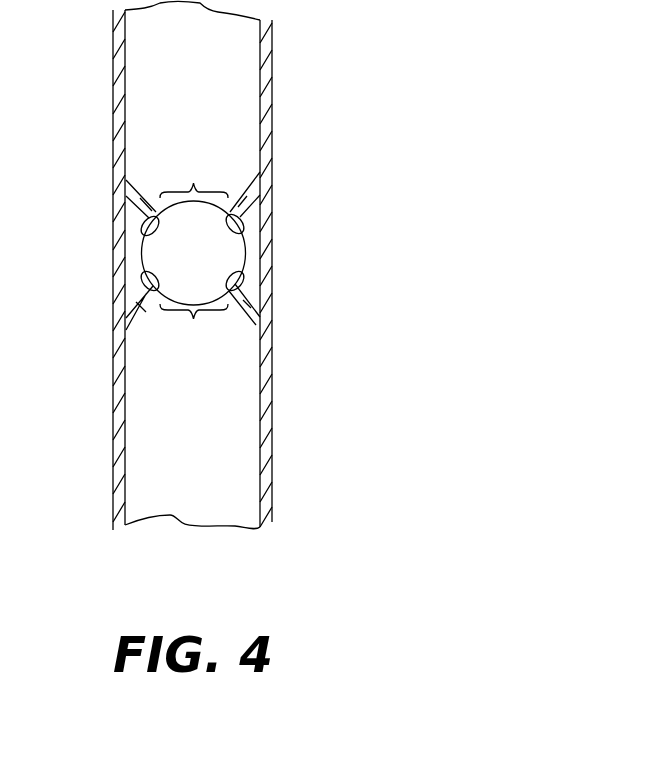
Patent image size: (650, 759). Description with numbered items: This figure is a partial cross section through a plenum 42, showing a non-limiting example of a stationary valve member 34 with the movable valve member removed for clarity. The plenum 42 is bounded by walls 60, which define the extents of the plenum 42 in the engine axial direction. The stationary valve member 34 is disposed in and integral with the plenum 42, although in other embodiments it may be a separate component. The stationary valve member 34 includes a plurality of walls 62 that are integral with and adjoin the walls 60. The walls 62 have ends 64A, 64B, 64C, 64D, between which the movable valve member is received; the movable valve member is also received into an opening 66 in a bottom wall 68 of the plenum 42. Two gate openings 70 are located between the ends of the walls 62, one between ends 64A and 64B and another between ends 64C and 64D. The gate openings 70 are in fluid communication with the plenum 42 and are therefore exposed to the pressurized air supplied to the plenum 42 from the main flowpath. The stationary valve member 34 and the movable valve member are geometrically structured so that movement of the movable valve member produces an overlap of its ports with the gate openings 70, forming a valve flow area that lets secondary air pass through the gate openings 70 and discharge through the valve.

The stationary valve member 34 is at (92, 188).
The plenum 42 is at (298, 453).
The walls 60 is at (263, 92).
The walls 62 is at (147, 218).
The end 64A is at (242, 234).
The end 64B is at (143, 237).
The end 64C is at (145, 283).
The end 64D is at (241, 279).
The opening 66 is at (192, 258).
The bottom wall 68 is at (195, 445).
The gate openings 70 is at (194, 254).